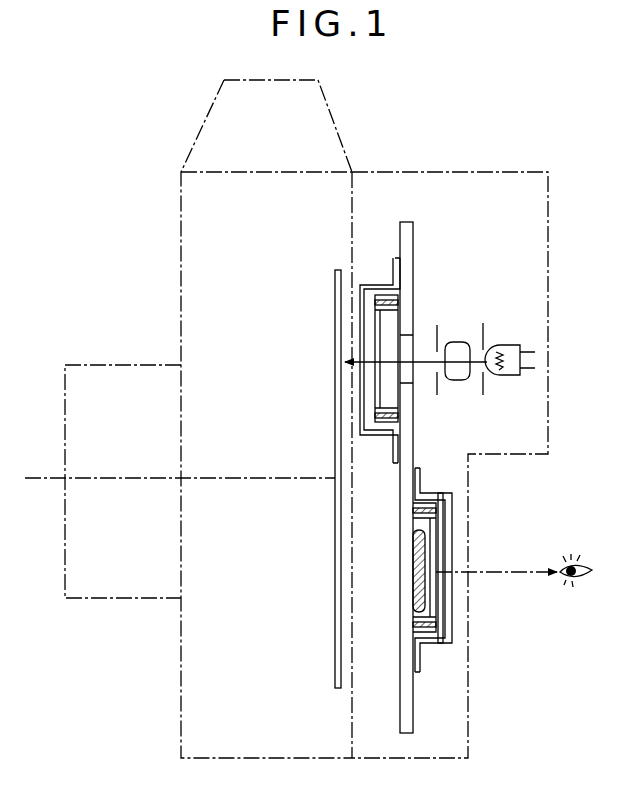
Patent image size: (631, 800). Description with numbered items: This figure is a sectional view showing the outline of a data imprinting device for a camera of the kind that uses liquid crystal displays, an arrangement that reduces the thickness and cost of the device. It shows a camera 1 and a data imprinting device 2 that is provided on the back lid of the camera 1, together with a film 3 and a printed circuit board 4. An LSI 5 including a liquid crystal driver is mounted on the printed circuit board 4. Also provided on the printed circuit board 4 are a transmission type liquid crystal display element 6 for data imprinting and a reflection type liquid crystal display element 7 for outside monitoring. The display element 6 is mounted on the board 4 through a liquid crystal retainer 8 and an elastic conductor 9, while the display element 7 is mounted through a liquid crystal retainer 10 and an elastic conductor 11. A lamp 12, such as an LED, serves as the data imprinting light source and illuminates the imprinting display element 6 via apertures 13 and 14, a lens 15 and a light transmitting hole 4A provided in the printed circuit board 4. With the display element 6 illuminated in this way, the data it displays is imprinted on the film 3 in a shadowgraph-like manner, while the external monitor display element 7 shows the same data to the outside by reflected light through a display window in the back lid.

The camera 1 is at (185, 112).
The data imprinting device 2 is at (455, 166).
The film 3 is at (335, 292).
The printed circuit board 4 is at (413, 240).
The light transmitting hole 4A is at (412, 352).
The LSI 5 is at (413, 572).
The transmission type liquid crystal display element 6 is at (378, 340).
The reflection type liquid crystal display element 7 is at (442, 538).
The liquid crystal retainer 8 is at (376, 290).
The elastic conductor 9 is at (389, 300).
The liquid crystal retainer 10 is at (447, 582).
The elastic conductor 11 is at (428, 510).
The lamp 12 is at (513, 345).
The aperture 13 is at (484, 395).
The aperture 14 is at (438, 398).
The lens 15 is at (462, 380).